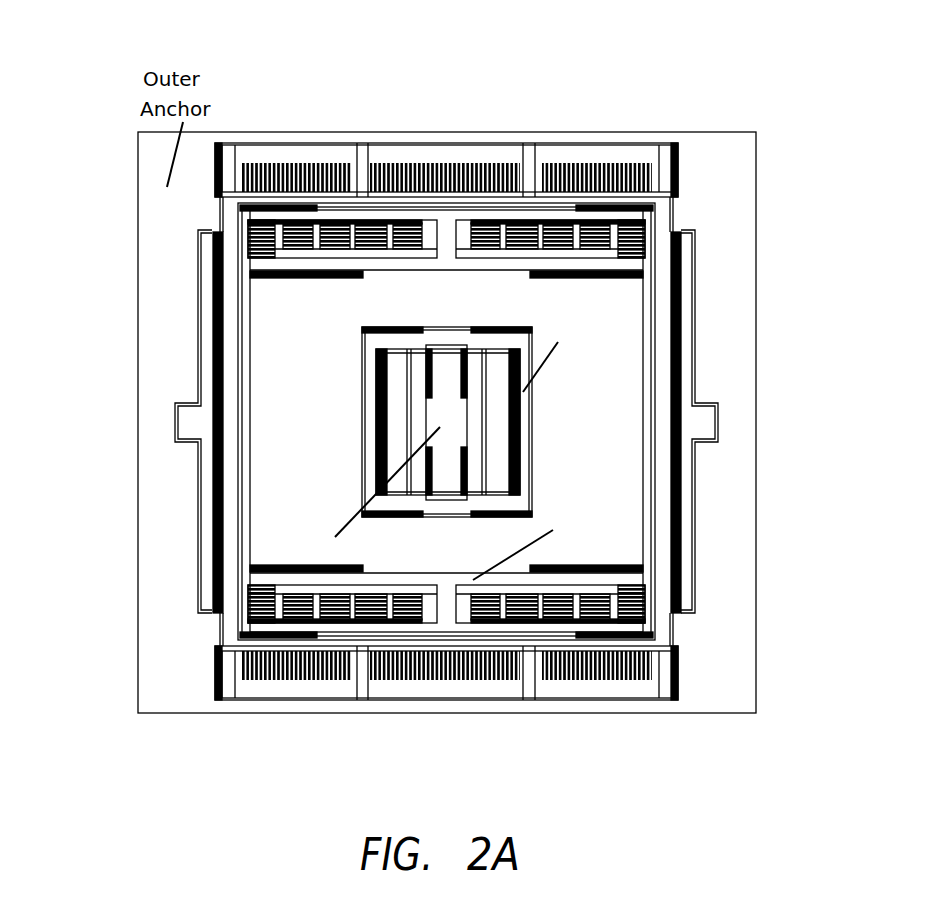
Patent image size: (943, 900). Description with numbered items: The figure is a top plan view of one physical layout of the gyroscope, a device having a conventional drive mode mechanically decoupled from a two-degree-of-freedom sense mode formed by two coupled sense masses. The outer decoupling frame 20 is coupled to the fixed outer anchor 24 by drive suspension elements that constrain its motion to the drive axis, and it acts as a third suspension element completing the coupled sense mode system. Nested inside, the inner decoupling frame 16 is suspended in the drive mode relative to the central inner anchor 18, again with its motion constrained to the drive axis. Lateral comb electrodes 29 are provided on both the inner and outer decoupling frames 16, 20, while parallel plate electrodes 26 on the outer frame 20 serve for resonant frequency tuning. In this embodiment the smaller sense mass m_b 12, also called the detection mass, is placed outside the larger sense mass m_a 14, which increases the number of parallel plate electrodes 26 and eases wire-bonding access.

The sense mass m_b 12 is at (592, 580).
The sense mass m_a 14 is at (500, 302).
The inner decoupling frame 16 is at (525, 413).
The inner anchor 18 is at (438, 403).
The outer decoupling frame 20 is at (622, 198).
The outer anchor 24 is at (147, 219).
The parallel plate electrodes 26 is at (517, 226).
The lateral comb electrodes 29 is at (378, 378).